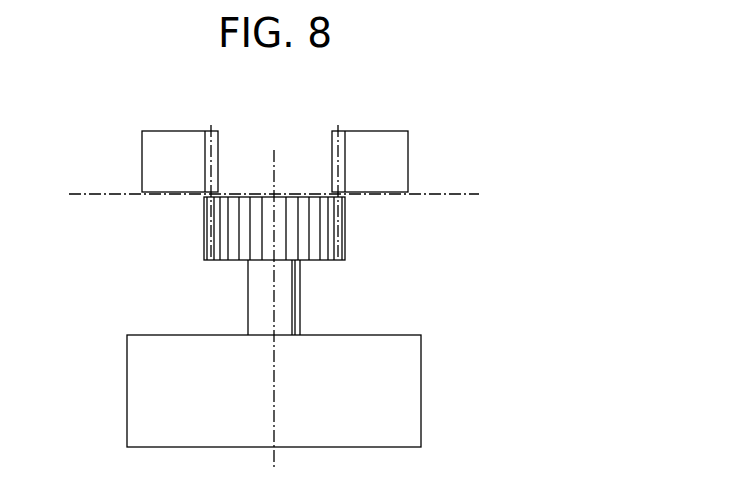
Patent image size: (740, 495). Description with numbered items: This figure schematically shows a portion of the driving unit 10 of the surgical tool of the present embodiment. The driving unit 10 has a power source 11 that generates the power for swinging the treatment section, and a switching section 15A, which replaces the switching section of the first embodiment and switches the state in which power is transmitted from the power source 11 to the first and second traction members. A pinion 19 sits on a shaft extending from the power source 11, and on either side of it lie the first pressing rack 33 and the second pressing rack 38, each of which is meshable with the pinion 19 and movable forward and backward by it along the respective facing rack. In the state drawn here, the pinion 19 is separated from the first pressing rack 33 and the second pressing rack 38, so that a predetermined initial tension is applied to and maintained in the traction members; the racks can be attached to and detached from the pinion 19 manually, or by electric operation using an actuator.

The first pressing rack 33 is at (155, 162).
The second pressing rack 38 is at (400, 159).
The pinion 19 is at (333, 232).
The power source 11 is at (416, 403).
The switching section 15A is at (448, 228).
The driving unit 10 is at (517, 332).